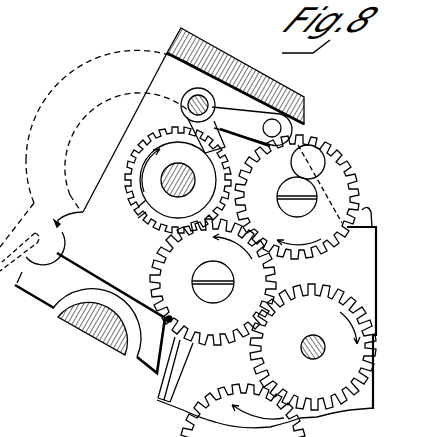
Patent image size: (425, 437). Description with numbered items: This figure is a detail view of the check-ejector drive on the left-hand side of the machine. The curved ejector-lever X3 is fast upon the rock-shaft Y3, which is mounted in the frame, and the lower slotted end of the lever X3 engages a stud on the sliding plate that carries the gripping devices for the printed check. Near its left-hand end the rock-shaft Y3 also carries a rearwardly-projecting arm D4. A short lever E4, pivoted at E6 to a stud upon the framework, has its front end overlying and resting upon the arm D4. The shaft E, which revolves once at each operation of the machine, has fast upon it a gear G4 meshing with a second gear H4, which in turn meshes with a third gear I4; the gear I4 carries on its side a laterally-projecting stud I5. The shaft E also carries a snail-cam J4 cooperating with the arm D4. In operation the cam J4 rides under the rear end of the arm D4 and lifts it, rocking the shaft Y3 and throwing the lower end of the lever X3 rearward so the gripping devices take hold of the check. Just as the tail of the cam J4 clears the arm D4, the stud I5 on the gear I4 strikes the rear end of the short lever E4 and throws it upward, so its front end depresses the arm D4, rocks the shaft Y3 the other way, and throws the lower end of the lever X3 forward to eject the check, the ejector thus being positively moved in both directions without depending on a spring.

The curved lever X3 is at (65, 78).
The rock-shaft Y3 is at (200, 98).
The pawl arm E4 is at (247, 118).
The pivot E6 is at (281, 127).
The third gear I4 is at (337, 167).
The laterally-projecting stud I5 is at (292, 165).
The rearwardly-projecting arm D4 is at (205, 152).
The shaft E is at (210, 197).
The snail-cam J4 is at (140, 205).
The gear G4 is at (139, 218).
The second gear H4 is at (152, 268).